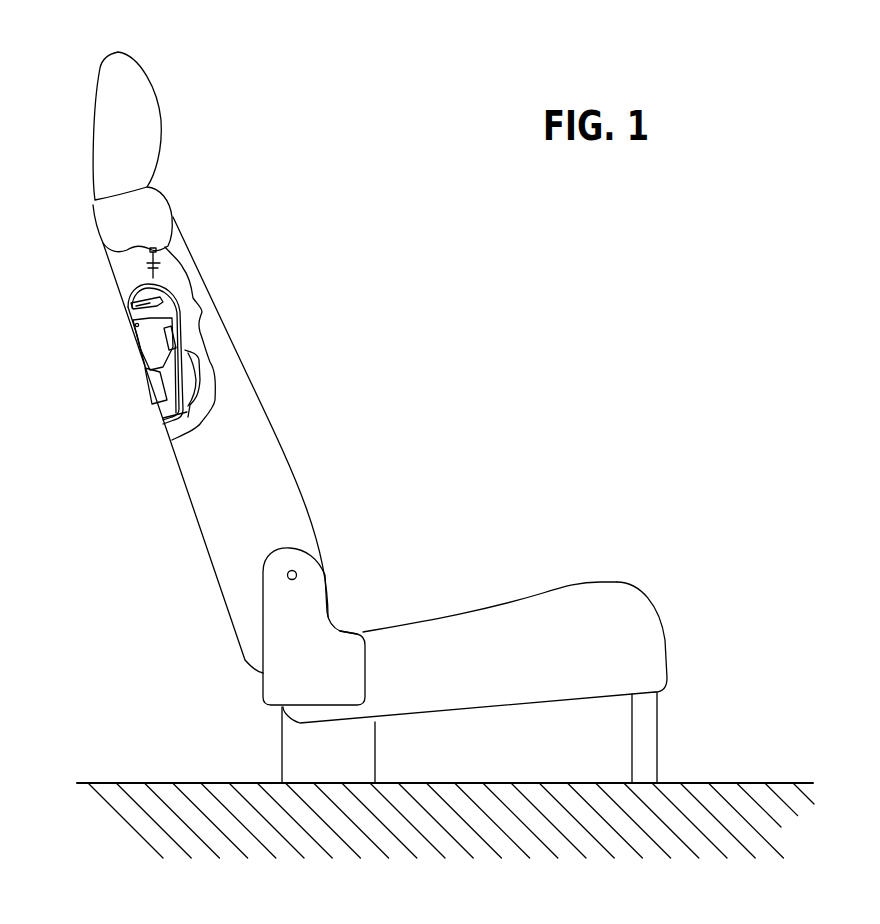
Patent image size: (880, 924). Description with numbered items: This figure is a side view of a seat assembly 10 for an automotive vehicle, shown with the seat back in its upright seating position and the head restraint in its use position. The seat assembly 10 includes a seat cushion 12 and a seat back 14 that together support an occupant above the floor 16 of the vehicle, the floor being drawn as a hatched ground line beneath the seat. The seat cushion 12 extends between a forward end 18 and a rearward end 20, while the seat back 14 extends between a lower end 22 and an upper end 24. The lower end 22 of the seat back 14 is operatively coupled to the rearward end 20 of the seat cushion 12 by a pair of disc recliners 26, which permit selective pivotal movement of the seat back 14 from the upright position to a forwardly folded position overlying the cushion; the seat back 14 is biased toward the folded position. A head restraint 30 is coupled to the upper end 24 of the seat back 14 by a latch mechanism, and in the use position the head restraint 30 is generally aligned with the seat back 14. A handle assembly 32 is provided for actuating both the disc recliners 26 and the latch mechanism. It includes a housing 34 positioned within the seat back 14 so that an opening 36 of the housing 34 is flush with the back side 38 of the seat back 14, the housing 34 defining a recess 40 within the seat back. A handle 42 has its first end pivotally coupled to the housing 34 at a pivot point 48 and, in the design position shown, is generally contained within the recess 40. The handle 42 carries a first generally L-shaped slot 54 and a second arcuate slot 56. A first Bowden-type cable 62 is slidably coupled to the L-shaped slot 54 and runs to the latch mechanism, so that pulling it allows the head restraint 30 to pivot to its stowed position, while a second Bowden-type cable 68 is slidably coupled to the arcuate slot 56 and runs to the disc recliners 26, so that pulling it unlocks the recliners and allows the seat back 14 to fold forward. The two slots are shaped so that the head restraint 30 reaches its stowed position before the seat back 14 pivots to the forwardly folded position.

The seat assembly 10 is at (387, 448).
The seat cushion 12 is at (500, 608).
The seat back 14 is at (277, 422).
The floor 16 is at (725, 781).
The forward end 18 is at (665, 648).
The rearward end 20 is at (378, 632).
The lower end 22 is at (240, 657).
The upper end 24 is at (163, 193).
The disc recliners 26 is at (297, 574).
The head restraint 30 is at (160, 120).
The handle assembly 32 is at (93, 339).
The housing 34 is at (183, 298).
The opening 36 is at (165, 410).
The back side 38 is at (197, 527).
The recess 40 is at (158, 417).
The handle 42 is at (148, 355).
The pivot point 48 is at (133, 327).
The L-shaped slot 54 is at (122, 300).
The arcuate slot 56 is at (187, 328).
The first Bowden-type cable 62 is at (156, 250).
The second Bowden-type cable 68 is at (203, 387).